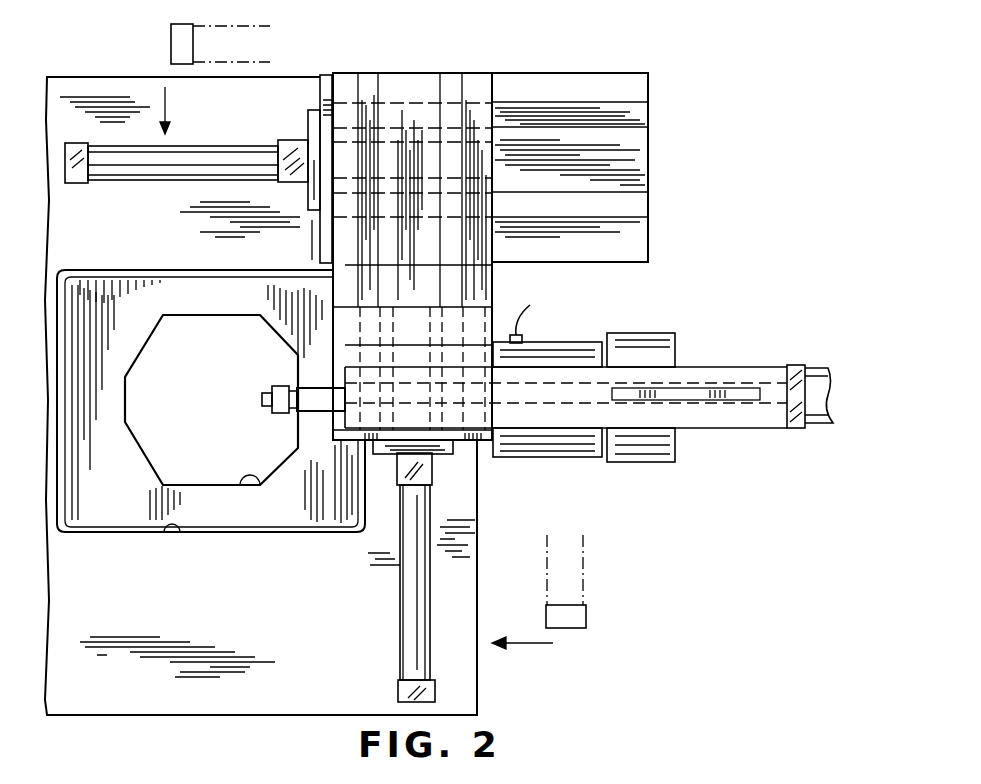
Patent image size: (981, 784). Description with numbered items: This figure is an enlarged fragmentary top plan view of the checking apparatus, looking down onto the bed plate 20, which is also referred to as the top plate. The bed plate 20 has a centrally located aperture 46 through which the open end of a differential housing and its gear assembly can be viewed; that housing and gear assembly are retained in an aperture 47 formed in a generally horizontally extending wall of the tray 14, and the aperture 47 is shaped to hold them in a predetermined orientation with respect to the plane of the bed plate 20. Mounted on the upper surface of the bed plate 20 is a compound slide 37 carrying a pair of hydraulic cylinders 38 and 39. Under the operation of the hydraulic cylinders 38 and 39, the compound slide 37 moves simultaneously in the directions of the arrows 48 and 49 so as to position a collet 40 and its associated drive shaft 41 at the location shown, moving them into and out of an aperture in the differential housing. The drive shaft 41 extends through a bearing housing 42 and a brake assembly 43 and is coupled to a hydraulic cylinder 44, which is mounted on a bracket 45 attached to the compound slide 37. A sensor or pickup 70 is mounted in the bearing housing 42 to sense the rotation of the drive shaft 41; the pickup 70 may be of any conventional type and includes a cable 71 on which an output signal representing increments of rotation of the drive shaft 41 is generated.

The tray 14 is at (130, 503).
The bed plate 20 is at (298, 606).
The compound slide 37 is at (668, 147).
The hydraulic cylinder 38 is at (171, 45).
The hydraulic cylinder 39 is at (408, 650).
The collet 40 is at (276, 413).
The drive shaft 41 is at (298, 392).
The bearing housing 42 is at (540, 457).
The brake assembly 43 is at (668, 462).
The hydraulic cylinder 44 is at (818, 428).
The bracket 45 is at (784, 365).
The aperture 46 is at (180, 532).
The aperture 47 is at (255, 480).
The arrow 48 is at (166, 100).
The arrow 49 is at (532, 646).
The pickup 70 is at (525, 338).
The cable 71 is at (530, 305).